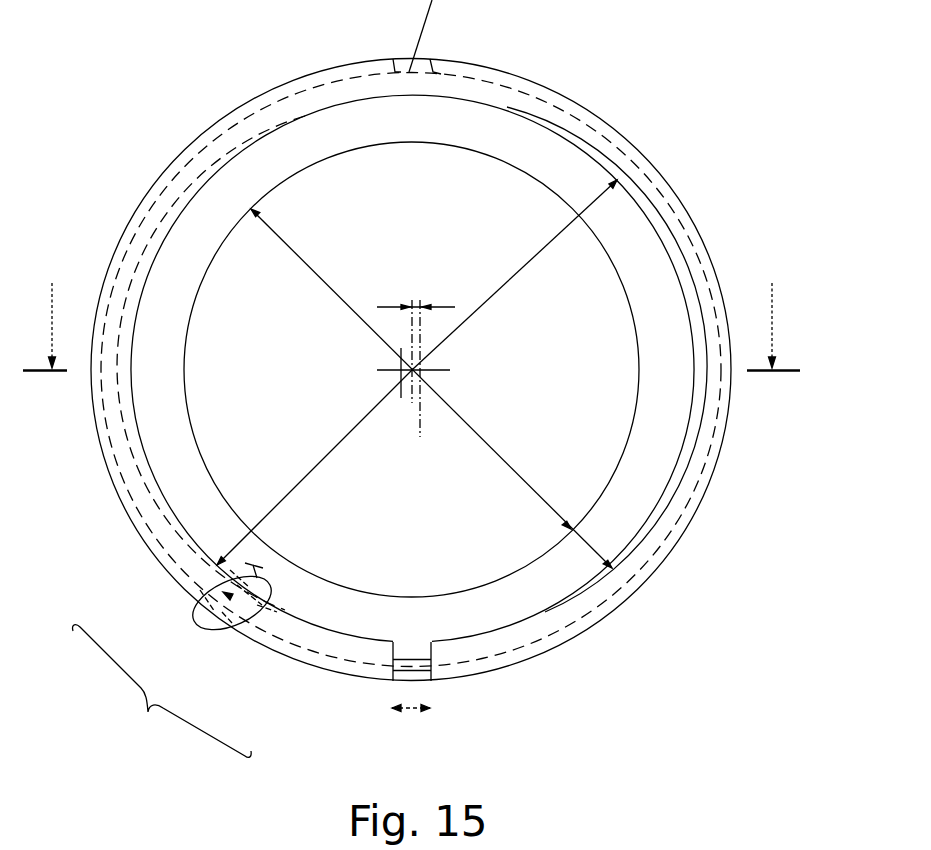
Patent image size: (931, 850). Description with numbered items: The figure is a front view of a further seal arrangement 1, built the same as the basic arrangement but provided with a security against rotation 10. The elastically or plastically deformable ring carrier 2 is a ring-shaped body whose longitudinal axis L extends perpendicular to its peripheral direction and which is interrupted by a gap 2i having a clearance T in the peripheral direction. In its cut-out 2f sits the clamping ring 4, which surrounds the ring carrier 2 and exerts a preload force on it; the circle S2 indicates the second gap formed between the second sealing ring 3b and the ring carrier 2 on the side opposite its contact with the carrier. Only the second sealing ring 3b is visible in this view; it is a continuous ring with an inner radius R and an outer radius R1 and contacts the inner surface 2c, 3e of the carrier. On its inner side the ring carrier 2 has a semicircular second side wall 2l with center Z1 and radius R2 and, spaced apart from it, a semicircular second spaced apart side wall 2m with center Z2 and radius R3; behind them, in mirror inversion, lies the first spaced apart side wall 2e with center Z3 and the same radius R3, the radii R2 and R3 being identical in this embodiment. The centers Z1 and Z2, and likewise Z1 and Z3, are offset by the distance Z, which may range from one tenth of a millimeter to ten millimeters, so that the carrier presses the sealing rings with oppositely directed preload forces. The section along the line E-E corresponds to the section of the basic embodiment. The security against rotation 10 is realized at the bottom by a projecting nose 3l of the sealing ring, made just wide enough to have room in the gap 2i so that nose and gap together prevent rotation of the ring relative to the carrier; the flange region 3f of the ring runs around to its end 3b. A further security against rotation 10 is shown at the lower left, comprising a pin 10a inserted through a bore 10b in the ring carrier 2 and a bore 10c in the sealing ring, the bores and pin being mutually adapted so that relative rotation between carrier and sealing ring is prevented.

The seal arrangement 1 is at (660, 130).
The ring carrier 2 is at (247, 128).
The inner circumferential surface of outer ring 2c is at (411, 369).
The first spaced apart side wall 2e is at (156, 475).
The cut-out 2f is at (503, 82).
The gap 2i is at (387, 670).
The second side wall 2l is at (140, 361).
The second spaced apart side wall 2m is at (684, 291).
The second sealing ring 3b is at (583, 570).
The inner circumferential surface of inner ring 3e is at (208, 304).
The flange of inner ring 3f is at (663, 220).
The nose 3l is at (432, 677).
The clamping ring 4 is at (448, 389).
The security against rotation 10 is at (378, 694).
The pin 10a is at (228, 606).
The bore 10b is at (190, 600).
The bore 10c is at (273, 605).
The section line E- E is at (411, 318).
The longitudinal axis L is at (414, 371).
The inner radius R is at (330, 262).
The outer radius R1 is at (600, 548).
The radius R2 is at (330, 488).
The radius R3 is at (527, 266).
The second gap S2 is at (695, 415).
The clearance T is at (412, 709).
The distance Z is at (416, 354).
The center Z1 is at (413, 372).
The center Z2 is at (415, 370).
The center Z3 is at (413, 370).